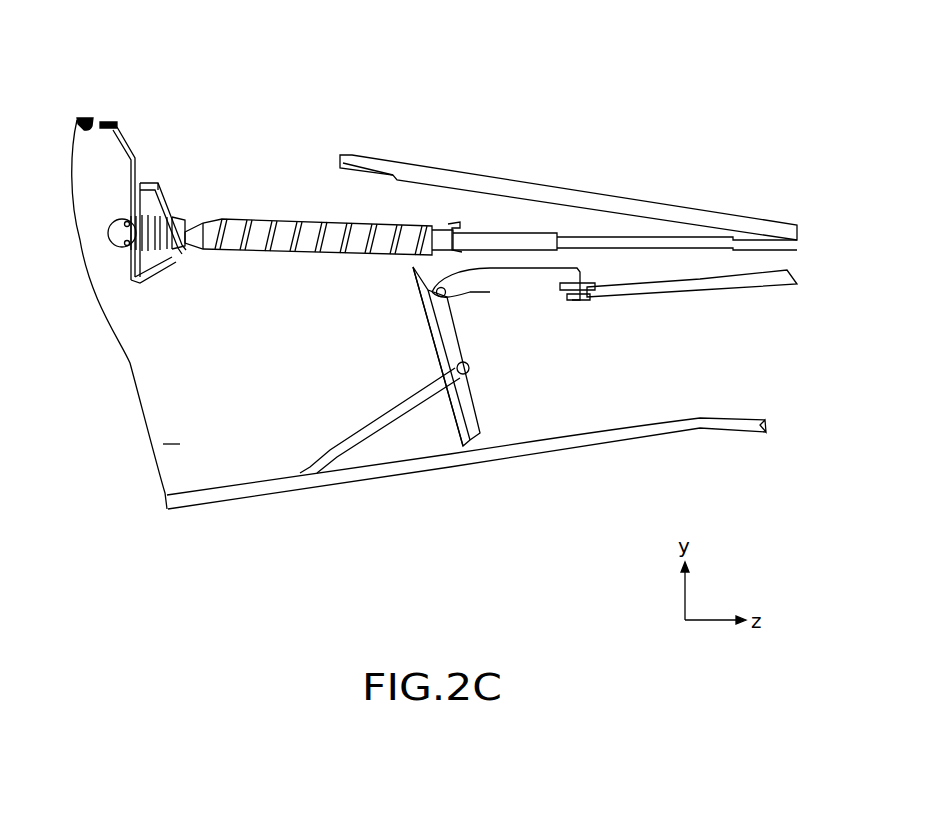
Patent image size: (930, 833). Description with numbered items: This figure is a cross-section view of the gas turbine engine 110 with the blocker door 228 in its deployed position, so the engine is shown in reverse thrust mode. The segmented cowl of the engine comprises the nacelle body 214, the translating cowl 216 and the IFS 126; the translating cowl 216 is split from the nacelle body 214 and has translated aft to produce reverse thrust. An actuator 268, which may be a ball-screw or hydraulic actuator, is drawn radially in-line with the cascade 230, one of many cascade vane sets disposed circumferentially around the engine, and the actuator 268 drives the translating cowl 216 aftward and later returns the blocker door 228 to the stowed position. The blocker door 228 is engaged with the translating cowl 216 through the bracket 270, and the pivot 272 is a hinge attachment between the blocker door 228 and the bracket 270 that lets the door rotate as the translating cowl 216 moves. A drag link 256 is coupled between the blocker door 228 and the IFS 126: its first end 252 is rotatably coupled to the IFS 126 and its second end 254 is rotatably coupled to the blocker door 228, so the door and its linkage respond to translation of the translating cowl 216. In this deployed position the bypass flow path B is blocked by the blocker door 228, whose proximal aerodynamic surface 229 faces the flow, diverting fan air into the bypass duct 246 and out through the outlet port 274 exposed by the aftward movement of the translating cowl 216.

The gas turbine engine 110 is at (540, 136).
The IFS 126 is at (220, 502).
The nacelle body 214 is at (81, 117).
The translating cowl 216 is at (467, 180).
The blocker door 228 is at (425, 336).
The aerodynamic surface 229 is at (423, 288).
The cascade 230 is at (300, 192).
The bypass duct 246 is at (246, 186).
The first end 252 is at (290, 470).
The second end 254 is at (474, 372).
The drag link 256 is at (388, 402).
The actuator 268 is at (118, 206).
The bracket 270 is at (585, 297).
The pivot 272 is at (445, 293).
The outlet port 274 is at (262, 152).
The bypass flow path B is at (126, 314).